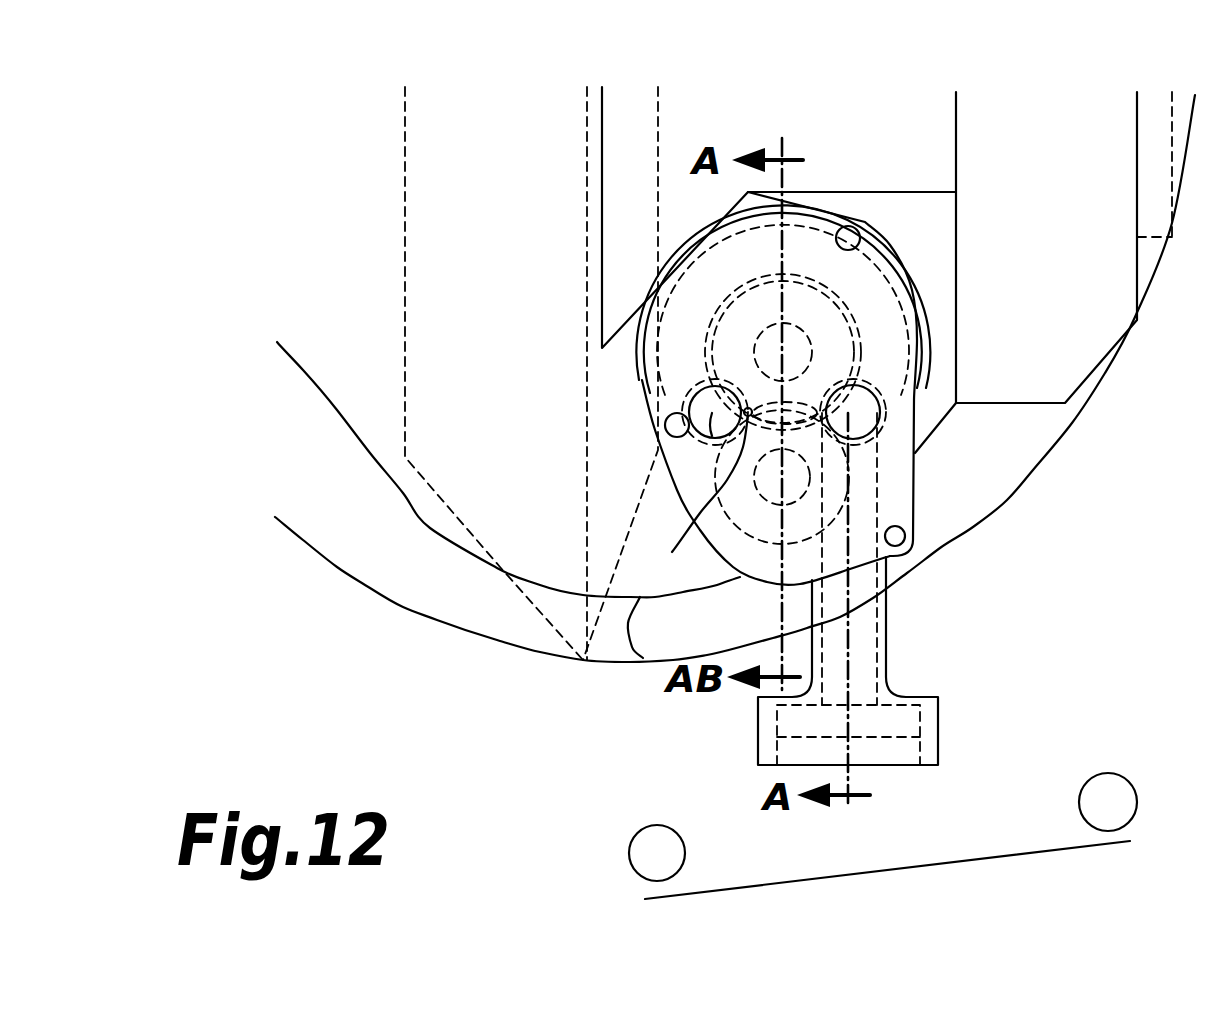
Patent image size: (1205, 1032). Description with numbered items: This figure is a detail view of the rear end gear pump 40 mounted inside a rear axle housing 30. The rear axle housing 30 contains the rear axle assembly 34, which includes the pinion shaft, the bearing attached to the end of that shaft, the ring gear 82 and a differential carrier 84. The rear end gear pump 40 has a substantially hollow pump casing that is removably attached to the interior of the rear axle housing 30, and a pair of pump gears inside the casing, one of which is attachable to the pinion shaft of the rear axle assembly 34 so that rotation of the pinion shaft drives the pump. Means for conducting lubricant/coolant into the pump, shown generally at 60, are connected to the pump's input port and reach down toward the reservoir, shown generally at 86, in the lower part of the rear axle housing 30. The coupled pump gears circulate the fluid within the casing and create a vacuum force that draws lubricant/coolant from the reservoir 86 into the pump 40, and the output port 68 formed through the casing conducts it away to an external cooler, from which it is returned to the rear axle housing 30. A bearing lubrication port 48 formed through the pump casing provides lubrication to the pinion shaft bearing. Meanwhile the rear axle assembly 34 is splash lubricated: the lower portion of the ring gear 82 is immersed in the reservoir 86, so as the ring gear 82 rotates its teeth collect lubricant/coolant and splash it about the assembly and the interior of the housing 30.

The rear axle housing 30 is at (866, 856).
The rear axle assembly 34 is at (383, 141).
The rear end gear pump 40 is at (942, 519).
The bearing lubrication port 48 is at (698, 501).
The means for conducting lubricant/coolant into the pump 60 is at (912, 646).
The output port 68 is at (748, 413).
The ring gear 82 is at (513, 355).
The differential carrier 84 is at (809, 391).
The reservoir 86 is at (340, 651).